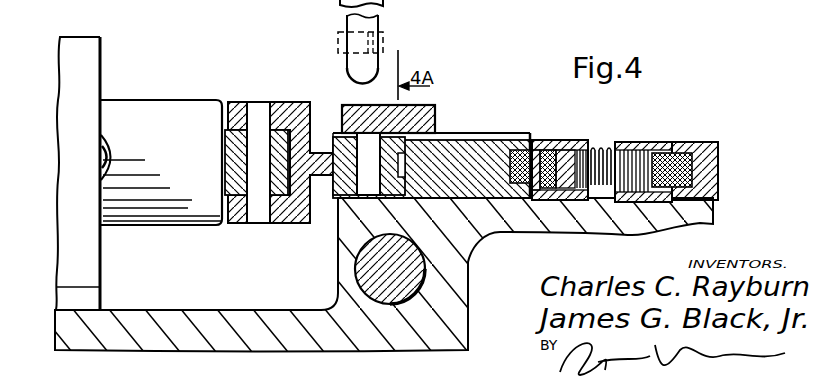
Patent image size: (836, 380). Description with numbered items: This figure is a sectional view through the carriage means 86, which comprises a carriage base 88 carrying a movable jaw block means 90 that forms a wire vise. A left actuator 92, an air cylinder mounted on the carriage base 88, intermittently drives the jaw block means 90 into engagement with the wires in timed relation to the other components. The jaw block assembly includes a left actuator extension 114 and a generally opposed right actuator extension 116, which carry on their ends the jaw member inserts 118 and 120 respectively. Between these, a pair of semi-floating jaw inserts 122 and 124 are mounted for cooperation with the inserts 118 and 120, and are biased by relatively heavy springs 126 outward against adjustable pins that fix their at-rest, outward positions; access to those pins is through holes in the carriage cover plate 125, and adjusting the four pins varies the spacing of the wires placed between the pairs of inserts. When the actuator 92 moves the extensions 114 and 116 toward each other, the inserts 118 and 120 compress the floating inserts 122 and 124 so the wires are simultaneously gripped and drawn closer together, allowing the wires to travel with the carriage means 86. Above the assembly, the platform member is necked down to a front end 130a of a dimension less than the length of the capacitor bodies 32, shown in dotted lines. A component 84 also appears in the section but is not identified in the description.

The capacitor body 32 is at (340, 51).
The roller 84 is at (360, 257).
The carriage means 86 is at (472, 151).
The carriage base 88 is at (469, 259).
The movable jaw block means 90 is at (691, 171).
The left actuator 92 is at (168, 84).
The left actuator extension 114 is at (453, 150).
The right actuator extension 116 is at (716, 158).
The jaw member insert 118 is at (515, 145).
The jaw member insert 120 is at (674, 150).
The semi-floating jaw insert 122 is at (551, 199).
The semi-floating jaw insert 124 is at (640, 202).
The carriage cover plate 125 is at (342, 108).
The springs 126 is at (606, 142).
The necked-down end of platform member 130a is at (386, 84).